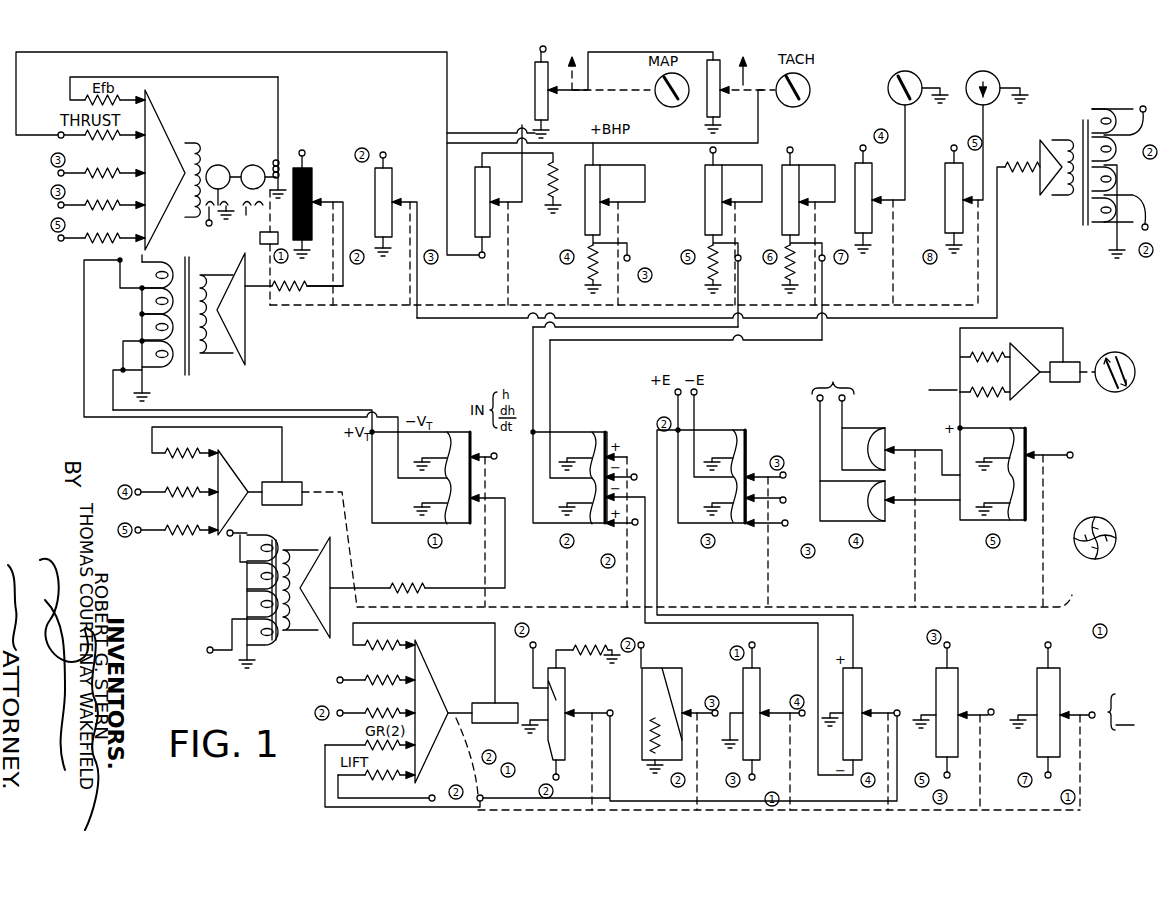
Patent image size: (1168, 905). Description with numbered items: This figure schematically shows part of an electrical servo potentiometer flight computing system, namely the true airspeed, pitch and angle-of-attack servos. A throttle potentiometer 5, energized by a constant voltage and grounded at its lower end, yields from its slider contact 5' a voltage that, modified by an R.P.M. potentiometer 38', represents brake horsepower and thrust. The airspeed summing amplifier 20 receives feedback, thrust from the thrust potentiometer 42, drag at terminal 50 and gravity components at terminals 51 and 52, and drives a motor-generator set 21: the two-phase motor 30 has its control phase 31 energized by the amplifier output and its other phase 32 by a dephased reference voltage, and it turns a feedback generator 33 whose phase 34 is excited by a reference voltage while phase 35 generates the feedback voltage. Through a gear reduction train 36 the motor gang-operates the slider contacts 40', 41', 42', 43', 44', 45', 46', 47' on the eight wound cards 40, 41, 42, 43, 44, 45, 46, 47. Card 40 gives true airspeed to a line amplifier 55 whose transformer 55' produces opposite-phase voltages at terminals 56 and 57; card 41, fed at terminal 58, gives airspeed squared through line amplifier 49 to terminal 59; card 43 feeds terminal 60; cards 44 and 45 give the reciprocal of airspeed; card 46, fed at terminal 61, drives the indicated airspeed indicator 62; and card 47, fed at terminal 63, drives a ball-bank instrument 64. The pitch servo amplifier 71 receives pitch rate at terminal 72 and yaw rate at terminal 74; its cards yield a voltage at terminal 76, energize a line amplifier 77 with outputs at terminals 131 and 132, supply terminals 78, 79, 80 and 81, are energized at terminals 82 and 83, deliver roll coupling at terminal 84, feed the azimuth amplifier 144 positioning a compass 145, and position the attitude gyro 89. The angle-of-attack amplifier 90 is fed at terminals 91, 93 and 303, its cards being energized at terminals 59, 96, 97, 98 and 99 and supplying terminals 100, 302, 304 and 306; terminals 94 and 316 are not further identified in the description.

The throttle potentiometer 5 is at (547, 85).
The slider contact 5' is at (630, 82).
The summing amplifier 20 is at (160, 122).
The motor-generator set 21 is at (258, 137).
The motor 30 is at (218, 175).
The control phase 31 is at (198, 140).
The reference phase 32 is at (216, 223).
The feedback generator 33 is at (253, 167).
The generator reference phase 34 is at (250, 216).
The generator output phase 35 is at (270, 157).
The gear reduction train 36 is at (260, 238).
The R.P.M. potentiometer 38' is at (740, 83).
The airspeed card number one 40 is at (314, 201).
The slider contact 40' is at (325, 235).
The airspeed card number two 41 is at (367, 207).
The slider contact 41' is at (412, 248).
The thrust potentiometer 42 is at (505, 205).
The slider contact 42' is at (506, 165).
The airspeed card number four 43 is at (589, 218).
The slider contact 43' is at (622, 185).
The airspeed card number five 44 is at (704, 235).
The slider contact 44' is at (742, 185).
The airspeed card number six 45 is at (790, 241).
The slider contact 45' is at (817, 185).
The airspeed card number seven 46 is at (849, 202).
The slider contact 46' is at (888, 154).
The airspeed card number eight 47 is at (940, 202).
The slider contact 47' is at (976, 154).
The line amplifier 49 is at (1040, 155).
The input terminal 50 is at (58, 173).
The input terminal 51 is at (58, 206).
The input terminal 52 is at (58, 239).
The line amplifier 55 is at (271, 309).
The transformer 55' is at (209, 330).
The terminal 56 is at (757, 638).
The terminal 57 is at (750, 781).
The terminal 58 is at (388, 143).
The terminal 59 is at (646, 641).
The terminal 60 is at (634, 254).
The terminal 61 is at (861, 146).
The indicator 62 is at (912, 73).
The terminal 63 is at (953, 146).
The instrument 64 is at (992, 73).
The pitch servo amplifier 71 is at (235, 462).
The terminal 72 is at (137, 490).
The terminal 74 is at (138, 533).
The terminal 76 is at (505, 449).
The line amplifier 77 is at (328, 634).
The terminal 78 is at (636, 473).
The terminal 79 is at (632, 528).
The terminal 80 is at (778, 467).
The terminal 81 is at (787, 526).
The terminal 82 is at (840, 443).
The terminal 83 is at (846, 405).
The terminal 84 is at (1079, 449).
The attitude gyro 89 is at (1083, 522).
The angle of attack servo amplifier 90 is at (432, 684).
The terminal 91 is at (340, 684).
The terminal 93 is at (341, 716).
The altitude lift acceleration potentiometer 94 is at (553, 778).
The terminal 96 is at (951, 641).
The terminal 97 is at (950, 778).
The terminal 98 is at (1051, 641).
The terminal 99 is at (1046, 779).
The terminal 100 is at (1097, 716).
The terminal 131 is at (233, 536).
The terminal 132 is at (207, 649).
The azimuth servo amplifier 144 is at (1020, 358).
The simulated compass 145 is at (1119, 353).
The terminal 302 is at (410, 762).
The terminal 303 is at (400, 782).
The terminal 304 is at (715, 717).
The terminal 306 is at (803, 710).
The flight path angle output terminal 316 is at (1124, 168).